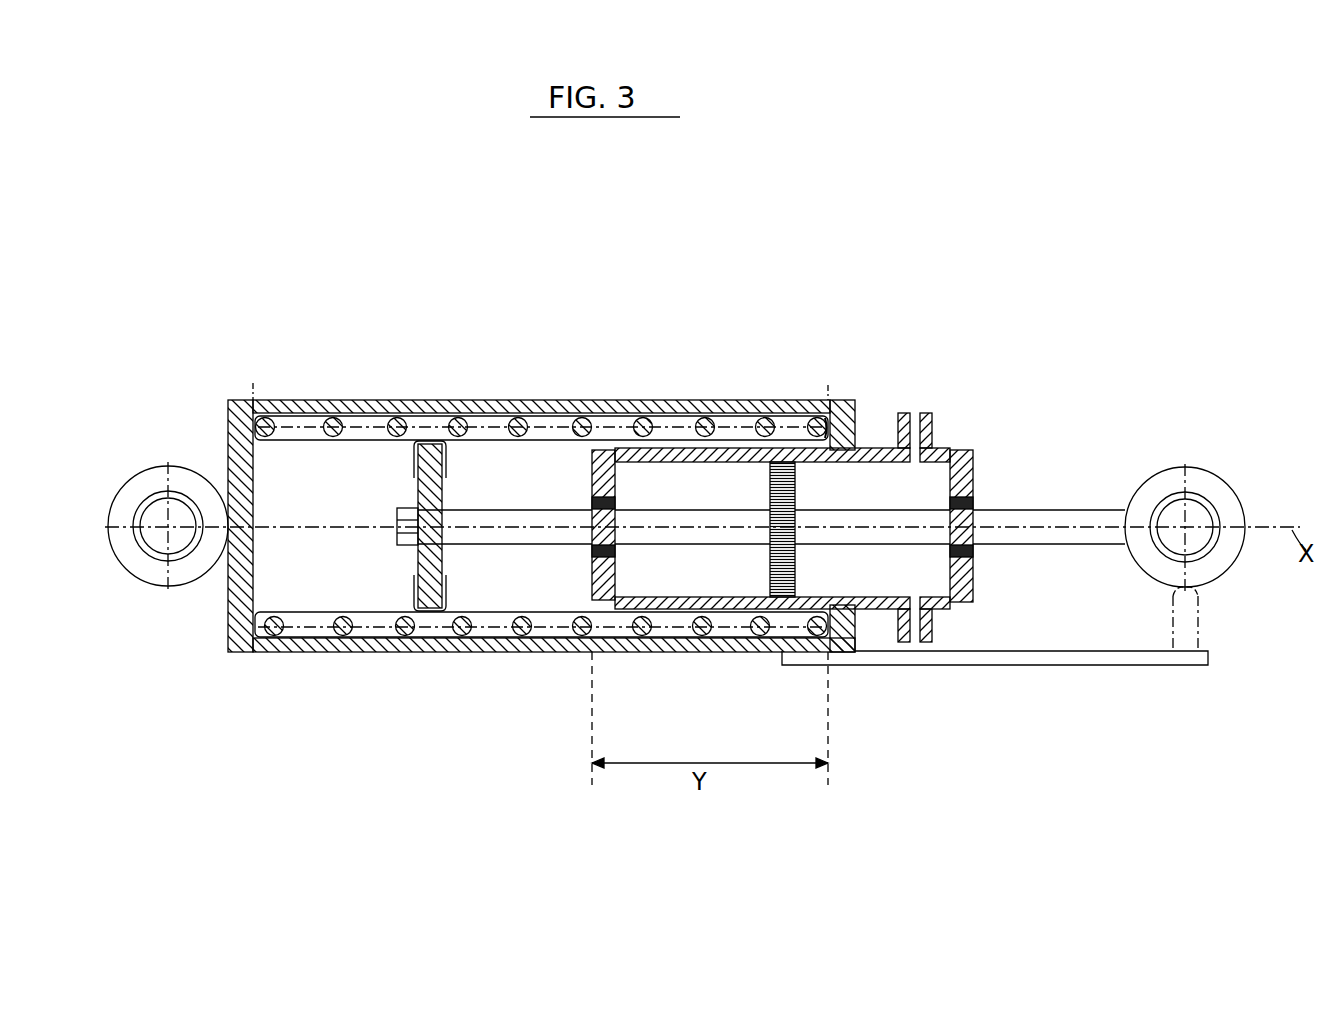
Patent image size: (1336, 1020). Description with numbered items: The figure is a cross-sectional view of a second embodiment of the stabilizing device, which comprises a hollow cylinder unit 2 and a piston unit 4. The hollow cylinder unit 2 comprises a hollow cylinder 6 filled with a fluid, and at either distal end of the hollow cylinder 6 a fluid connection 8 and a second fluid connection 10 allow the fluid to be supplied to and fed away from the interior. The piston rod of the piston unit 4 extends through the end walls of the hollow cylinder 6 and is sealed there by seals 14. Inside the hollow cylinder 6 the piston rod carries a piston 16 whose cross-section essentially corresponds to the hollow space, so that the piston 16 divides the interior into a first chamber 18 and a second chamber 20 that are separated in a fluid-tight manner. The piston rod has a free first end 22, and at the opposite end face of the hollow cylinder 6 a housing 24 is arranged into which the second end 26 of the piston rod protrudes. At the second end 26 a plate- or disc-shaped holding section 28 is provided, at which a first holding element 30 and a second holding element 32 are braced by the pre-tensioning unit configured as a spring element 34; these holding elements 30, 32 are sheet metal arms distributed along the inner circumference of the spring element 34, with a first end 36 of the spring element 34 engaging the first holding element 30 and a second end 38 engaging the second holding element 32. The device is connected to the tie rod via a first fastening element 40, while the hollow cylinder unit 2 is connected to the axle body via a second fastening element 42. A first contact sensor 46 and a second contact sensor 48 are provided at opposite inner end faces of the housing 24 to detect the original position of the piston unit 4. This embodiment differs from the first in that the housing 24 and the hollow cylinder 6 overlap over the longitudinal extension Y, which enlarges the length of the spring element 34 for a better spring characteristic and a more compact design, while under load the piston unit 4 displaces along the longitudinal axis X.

The hollow cylinder unit 2 is at (541, 510).
The piston unit 4 is at (874, 505).
The hollow cylinder 6 is at (863, 455).
The fluid connection 8 is at (933, 630).
The second fluid connection 10 is at (933, 418).
The seals 14 is at (592, 556).
The piston 16 is at (798, 568).
The first chamber 18 is at (710, 503).
The second chamber 20 is at (882, 503).
The first end 22 is at (1115, 511).
The housing 24 is at (512, 652).
The second end 26 is at (455, 510).
The holding section 28 is at (441, 557).
The first holding element 30 is at (560, 441).
The second holding element 32 is at (330, 441).
The spring element 34 is at (405, 640).
The first end 36 is at (818, 428).
The second end 38 is at (273, 418).
The first fastening element 40 is at (1215, 498).
The second fastening element 42 is at (148, 478).
The first contact sensor 46 is at (258, 383).
The second contact sensor 48 is at (828, 385).